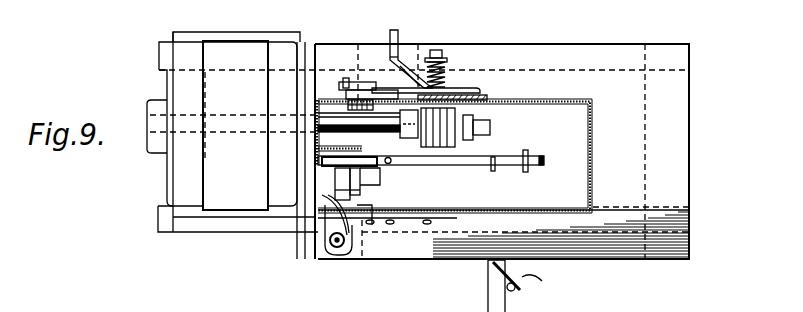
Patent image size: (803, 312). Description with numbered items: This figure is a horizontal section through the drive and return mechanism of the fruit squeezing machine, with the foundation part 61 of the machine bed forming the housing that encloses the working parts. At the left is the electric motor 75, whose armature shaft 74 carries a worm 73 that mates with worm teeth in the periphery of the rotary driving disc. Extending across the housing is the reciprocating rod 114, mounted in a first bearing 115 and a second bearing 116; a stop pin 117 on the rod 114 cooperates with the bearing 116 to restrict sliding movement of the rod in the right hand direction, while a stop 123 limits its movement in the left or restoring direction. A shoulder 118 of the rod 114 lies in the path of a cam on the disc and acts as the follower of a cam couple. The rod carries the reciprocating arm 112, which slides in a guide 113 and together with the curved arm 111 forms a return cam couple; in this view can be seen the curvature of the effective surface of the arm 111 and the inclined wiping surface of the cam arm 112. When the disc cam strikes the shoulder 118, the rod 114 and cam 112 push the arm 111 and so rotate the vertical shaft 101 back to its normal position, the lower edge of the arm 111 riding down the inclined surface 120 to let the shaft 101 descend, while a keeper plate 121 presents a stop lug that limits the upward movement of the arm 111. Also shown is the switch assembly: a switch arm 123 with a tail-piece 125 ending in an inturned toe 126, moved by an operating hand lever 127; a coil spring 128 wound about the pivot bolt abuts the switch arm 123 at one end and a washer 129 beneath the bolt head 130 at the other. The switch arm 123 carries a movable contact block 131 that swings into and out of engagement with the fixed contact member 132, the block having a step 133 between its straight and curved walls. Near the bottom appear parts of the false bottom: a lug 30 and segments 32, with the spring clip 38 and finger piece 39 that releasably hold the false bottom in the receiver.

The foundation part 61 is at (689, 167).
The electric motor 75 is at (170, 174).
The curved arm 111 is at (317, 206).
The switch arm 123 is at (369, 83).
The fixed contact member 132 is at (345, 78).
The movable contact block 131 is at (346, 104).
The operating hand lever 127 is at (395, 30).
The shoulder or step 133 is at (409, 66).
The bolt head 130 is at (443, 50).
The washer 129 is at (447, 62).
The coil spring 128 is at (447, 72).
The tail-piece 125 is at (479, 88).
The inturned toe 126 is at (489, 97).
The bearing 115 is at (318, 132).
The worm 73 is at (446, 147).
The armature shaft 74 is at (490, 128).
The reciprocating rod 114 is at (545, 161).
The bearing 116 is at (529, 170).
The stop pin 117 is at (494, 171).
The guide 113 is at (367, 181).
The reciprocating arm 112 is at (360, 198).
The shoulder 118 is at (418, 167).
The vertical shaft 101 is at (326, 243).
The inclined surface 120 is at (340, 247).
The keeper plate 121 is at (384, 232).
The finger piece 39 is at (522, 284).
The spring clip 38 is at (531, 292).
The lug 30 is at (298, 301).
The segment 32 is at (413, 301).